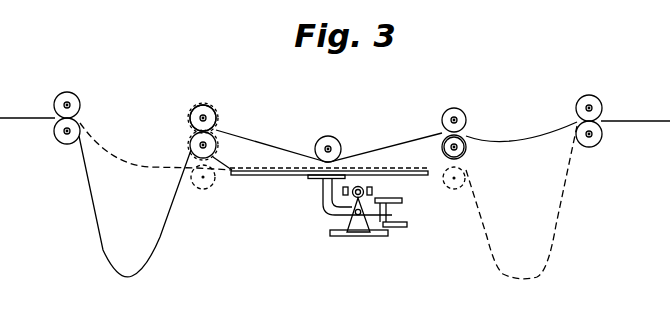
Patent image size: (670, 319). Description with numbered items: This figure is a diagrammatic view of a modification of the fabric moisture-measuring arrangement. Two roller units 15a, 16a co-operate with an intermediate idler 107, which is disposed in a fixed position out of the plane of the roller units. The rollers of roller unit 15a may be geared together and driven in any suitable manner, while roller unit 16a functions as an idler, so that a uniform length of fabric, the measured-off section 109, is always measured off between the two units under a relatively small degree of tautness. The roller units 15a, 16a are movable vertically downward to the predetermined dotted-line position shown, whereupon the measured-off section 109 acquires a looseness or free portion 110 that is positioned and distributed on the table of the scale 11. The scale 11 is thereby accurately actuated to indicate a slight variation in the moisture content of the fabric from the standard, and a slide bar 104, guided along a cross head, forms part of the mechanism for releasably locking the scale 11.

The scale 11 is at (323, 242).
The roller unit 15a is at (184, 127).
The roller unit 16a is at (470, 126).
The slide bar 104 is at (398, 227).
The intermediate idler 107 is at (338, 136).
The measured-off section 109 is at (204, 104).
The free portion 110 is at (394, 170).